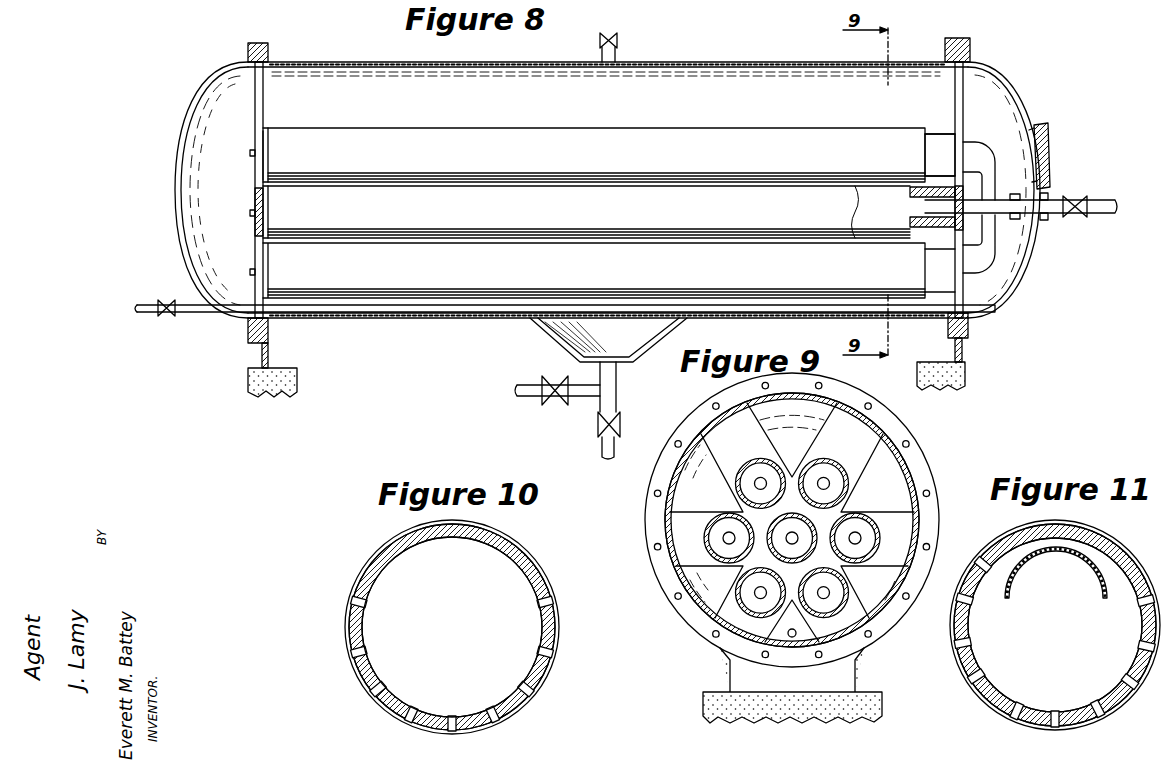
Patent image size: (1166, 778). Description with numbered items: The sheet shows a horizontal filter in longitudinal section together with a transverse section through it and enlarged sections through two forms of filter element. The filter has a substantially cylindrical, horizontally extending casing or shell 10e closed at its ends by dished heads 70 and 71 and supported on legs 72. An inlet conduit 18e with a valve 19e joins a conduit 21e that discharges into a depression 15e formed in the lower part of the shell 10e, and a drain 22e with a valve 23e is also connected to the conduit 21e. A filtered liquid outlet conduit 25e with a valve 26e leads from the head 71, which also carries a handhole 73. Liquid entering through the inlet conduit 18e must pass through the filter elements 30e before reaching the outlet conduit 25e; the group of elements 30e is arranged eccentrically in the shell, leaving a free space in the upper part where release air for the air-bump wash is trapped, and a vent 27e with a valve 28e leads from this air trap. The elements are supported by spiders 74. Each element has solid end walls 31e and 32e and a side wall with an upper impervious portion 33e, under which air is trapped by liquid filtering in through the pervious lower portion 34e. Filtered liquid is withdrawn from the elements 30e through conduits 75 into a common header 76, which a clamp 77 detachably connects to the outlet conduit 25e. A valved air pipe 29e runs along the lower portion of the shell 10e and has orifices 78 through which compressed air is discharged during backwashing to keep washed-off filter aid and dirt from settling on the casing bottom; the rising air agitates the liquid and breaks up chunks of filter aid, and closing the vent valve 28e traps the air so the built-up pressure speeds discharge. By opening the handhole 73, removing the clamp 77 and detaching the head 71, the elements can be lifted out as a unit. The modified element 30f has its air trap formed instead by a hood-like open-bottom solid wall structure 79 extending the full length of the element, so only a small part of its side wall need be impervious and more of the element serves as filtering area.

In FIG. 8, the casing or shell 10e is at (318, 62).
In FIG. 9, the casing or shell 10e is at (700, 616).
In FIG. 8, the depression 15e is at (668, 340).
In FIG. 8, the inlet conduit 18e is at (530, 384).
In FIG. 8, the valve 19e is at (548, 400).
In FIG. 8, the conduit 21e is at (617, 384).
In FIG. 8, the drain 22e is at (616, 446).
In FIG. 8, the valve 23e is at (620, 420).
In FIG. 8, the filtered liquid outlet conduit 25e is at (1045, 215).
In FIG. 8, the valve 26e is at (1090, 198).
In FIG. 8, the vent 27e is at (617, 58).
In FIG. 8, the valve 28e is at (617, 40).
In FIG. 8, the valved air pipe 29e is at (205, 318).
In FIG. 8, the elements 30e is at (458, 128).
In FIG. 9, the elements 30e is at (712, 562).
In FIG. 10, the elements 30e is at (470, 626).
In FIG. 11, the modified element 30f is at (1062, 645).
In FIG. 8, the end wall 31e is at (252, 222).
In FIG. 8, the end wall 32e is at (944, 122).
In FIG. 10, the upper impervious portion 33e is at (532, 556).
In FIG. 10, the pervious lower portion 34e is at (368, 688).
In FIG. 8, the dished head 70 is at (182, 258).
In FIG. 8, the dished head 71 is at (1020, 92).
In FIG. 8, the legs 72 is at (963, 358).
In FIG. 8, the handhole 73 is at (1050, 130).
In FIG. 8, the spiders 74 is at (252, 110).
In FIG. 9, the spiders 74 is at (880, 470).
In FIG. 8, the conduits 75 is at (1000, 276).
In FIG. 8, the common header 76 is at (1010, 220).
In FIG. 8, the clamp 77 is at (1046, 194).
In FIG. 8, the orifices 78 is at (370, 318).
In FIG. 11, the hood-like open-bottom solid wall structure 79 is at (1087, 560).